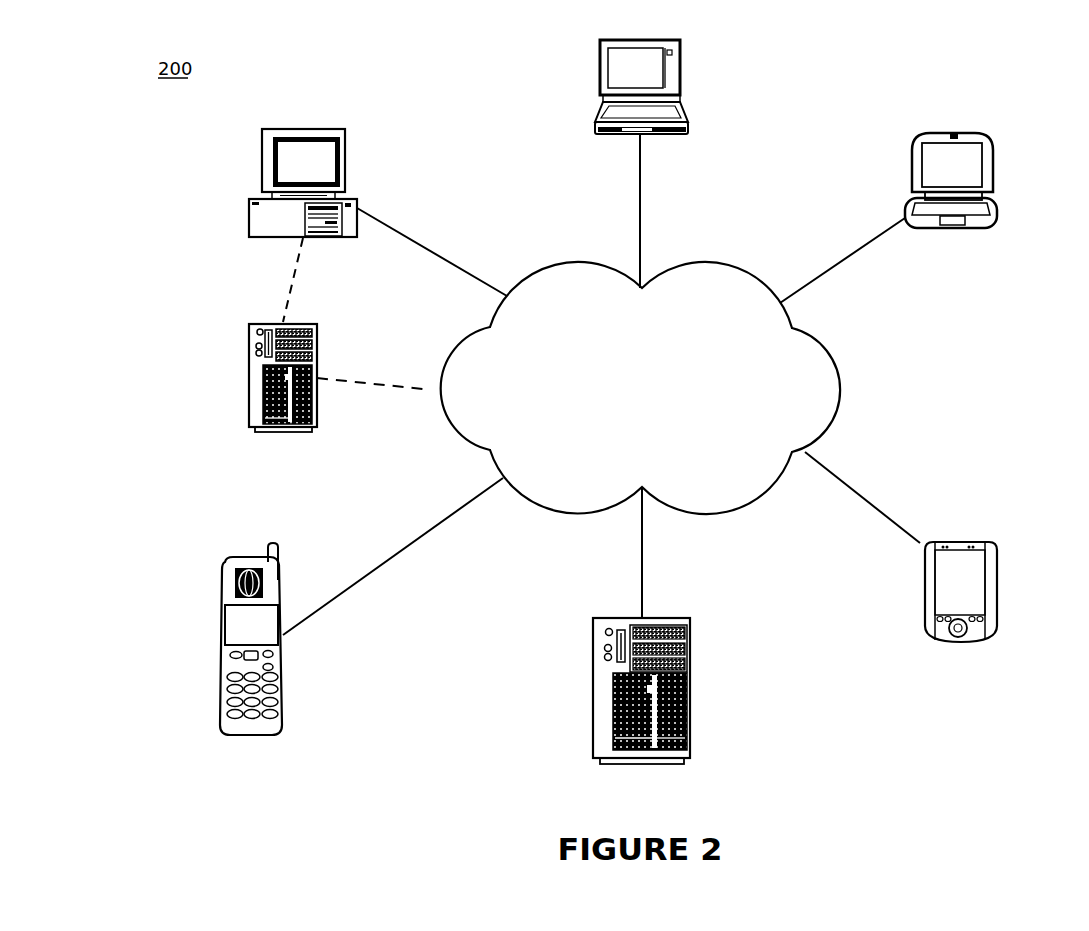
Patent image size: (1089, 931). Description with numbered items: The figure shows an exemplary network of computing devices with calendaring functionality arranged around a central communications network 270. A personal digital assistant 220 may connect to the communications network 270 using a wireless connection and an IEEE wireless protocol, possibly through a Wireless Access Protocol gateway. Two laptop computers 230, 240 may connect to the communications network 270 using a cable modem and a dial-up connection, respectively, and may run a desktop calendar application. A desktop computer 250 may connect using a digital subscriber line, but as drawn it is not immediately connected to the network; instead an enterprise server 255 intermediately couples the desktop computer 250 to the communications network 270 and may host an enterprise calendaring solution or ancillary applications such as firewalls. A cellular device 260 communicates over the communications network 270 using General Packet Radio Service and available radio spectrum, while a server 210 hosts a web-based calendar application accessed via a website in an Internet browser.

The server 210 is at (690, 690).
The personal digital assistant 220 is at (997, 590).
The laptop computer 230 is at (1003, 210).
The laptop computer 240 is at (683, 83).
The desktop computer 250 is at (249, 210).
The enterprise server 255 is at (249, 378).
The cellular device 260 is at (220, 640).
The communications network 270 is at (640, 388).